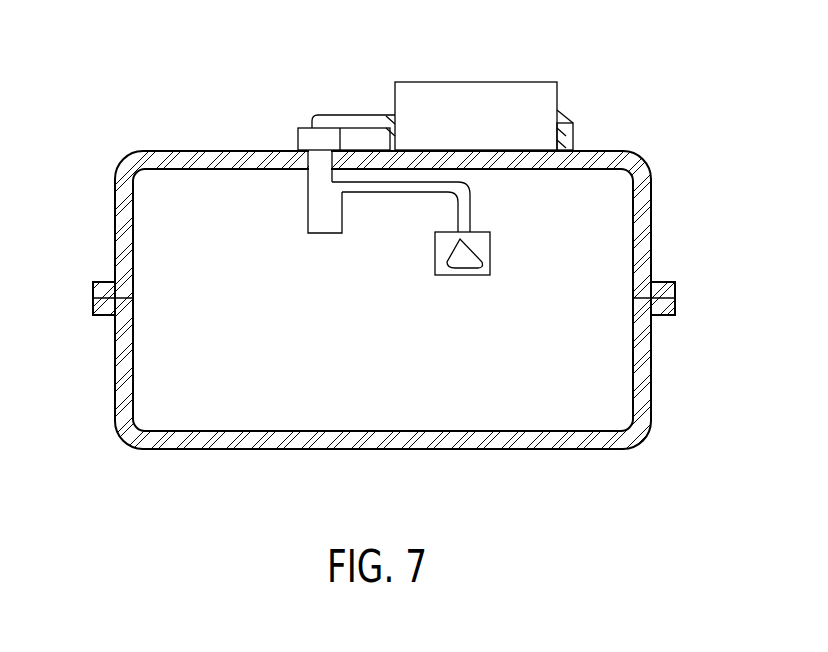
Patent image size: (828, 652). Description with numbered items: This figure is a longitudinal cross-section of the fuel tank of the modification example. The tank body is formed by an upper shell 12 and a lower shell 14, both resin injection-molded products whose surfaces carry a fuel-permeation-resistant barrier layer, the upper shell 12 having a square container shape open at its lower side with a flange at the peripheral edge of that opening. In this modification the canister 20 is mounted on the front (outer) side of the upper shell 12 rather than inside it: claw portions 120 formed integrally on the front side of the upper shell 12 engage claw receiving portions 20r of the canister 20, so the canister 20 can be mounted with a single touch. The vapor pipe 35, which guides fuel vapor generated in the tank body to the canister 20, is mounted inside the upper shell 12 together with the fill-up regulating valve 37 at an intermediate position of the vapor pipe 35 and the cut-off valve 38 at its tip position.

The upper shell 12 is at (580, 150).
The lower shell 14 is at (489, 442).
The canister 20 is at (461, 78).
The claw receiving portion 20r is at (366, 130).
The claw portion 120 is at (392, 112).
The vapor pipe 35 is at (320, 162).
The fill-up regulating valve 37 is at (470, 256).
The cut-off valve 38 is at (327, 218).